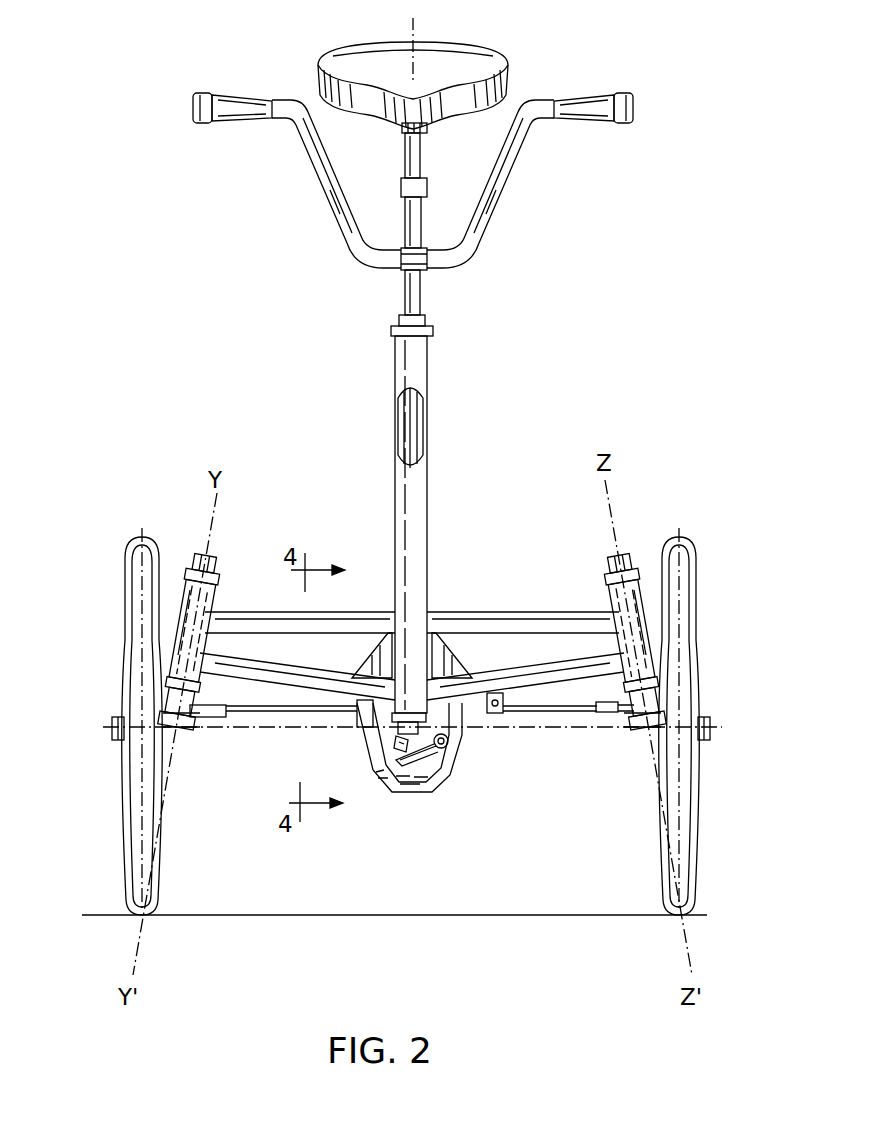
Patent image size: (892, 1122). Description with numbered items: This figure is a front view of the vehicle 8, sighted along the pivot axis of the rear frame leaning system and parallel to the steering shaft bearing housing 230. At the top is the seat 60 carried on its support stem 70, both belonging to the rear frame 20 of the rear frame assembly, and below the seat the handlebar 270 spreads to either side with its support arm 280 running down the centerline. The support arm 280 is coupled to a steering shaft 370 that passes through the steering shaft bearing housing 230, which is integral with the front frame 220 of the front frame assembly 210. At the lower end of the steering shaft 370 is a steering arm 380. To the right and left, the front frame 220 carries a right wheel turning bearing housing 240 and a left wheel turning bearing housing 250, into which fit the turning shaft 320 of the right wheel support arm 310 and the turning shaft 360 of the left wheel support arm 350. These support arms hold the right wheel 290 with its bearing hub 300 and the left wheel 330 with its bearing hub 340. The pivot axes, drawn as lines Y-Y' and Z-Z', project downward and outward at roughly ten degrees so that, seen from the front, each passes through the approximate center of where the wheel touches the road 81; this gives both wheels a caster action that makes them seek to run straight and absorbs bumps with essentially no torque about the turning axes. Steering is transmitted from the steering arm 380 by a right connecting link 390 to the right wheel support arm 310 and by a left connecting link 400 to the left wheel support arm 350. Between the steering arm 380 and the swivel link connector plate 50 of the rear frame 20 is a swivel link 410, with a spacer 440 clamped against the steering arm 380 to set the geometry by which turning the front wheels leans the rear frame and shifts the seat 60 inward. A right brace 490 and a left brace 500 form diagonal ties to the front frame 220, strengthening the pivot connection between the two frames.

The vehicle 8 is at (226, 372).
The rear frame 20 is at (423, 220).
The swivel link connector plate 50 is at (464, 755).
The seat 60 is at (454, 44).
The support stem 70 is at (423, 157).
The road 81 is at (468, 913).
The front frame assembly 210 is at (442, 570).
The front frame 220 is at (500, 612).
The steering shaft bearing housing 230 is at (432, 497).
The right wheel turning bearing housing 240 is at (213, 600).
The left wheel turning bearing housing 250 is at (605, 590).
The handlebar 270 is at (512, 170).
The support arm 280 is at (423, 288).
The right wheel 290 is at (125, 560).
The bearing hub 300 is at (117, 717).
The right wheel support arm 310 is at (180, 740).
The turning shaft 320 is at (177, 625).
The left wheel 330 is at (698, 567).
The bearing hub 340 is at (706, 715).
The left wheel support arm 350 is at (640, 733).
The turning shaft 360 is at (640, 615).
The steering shaft 370 is at (412, 417).
The steering arm 380 is at (390, 733).
The right connecting link 390 is at (257, 712).
The left connecting link 400 is at (548, 710).
The swivel link 410 is at (432, 780).
The spacer 440 is at (407, 736).
The right brace 490 is at (362, 668).
The left brace 500 is at (470, 652).